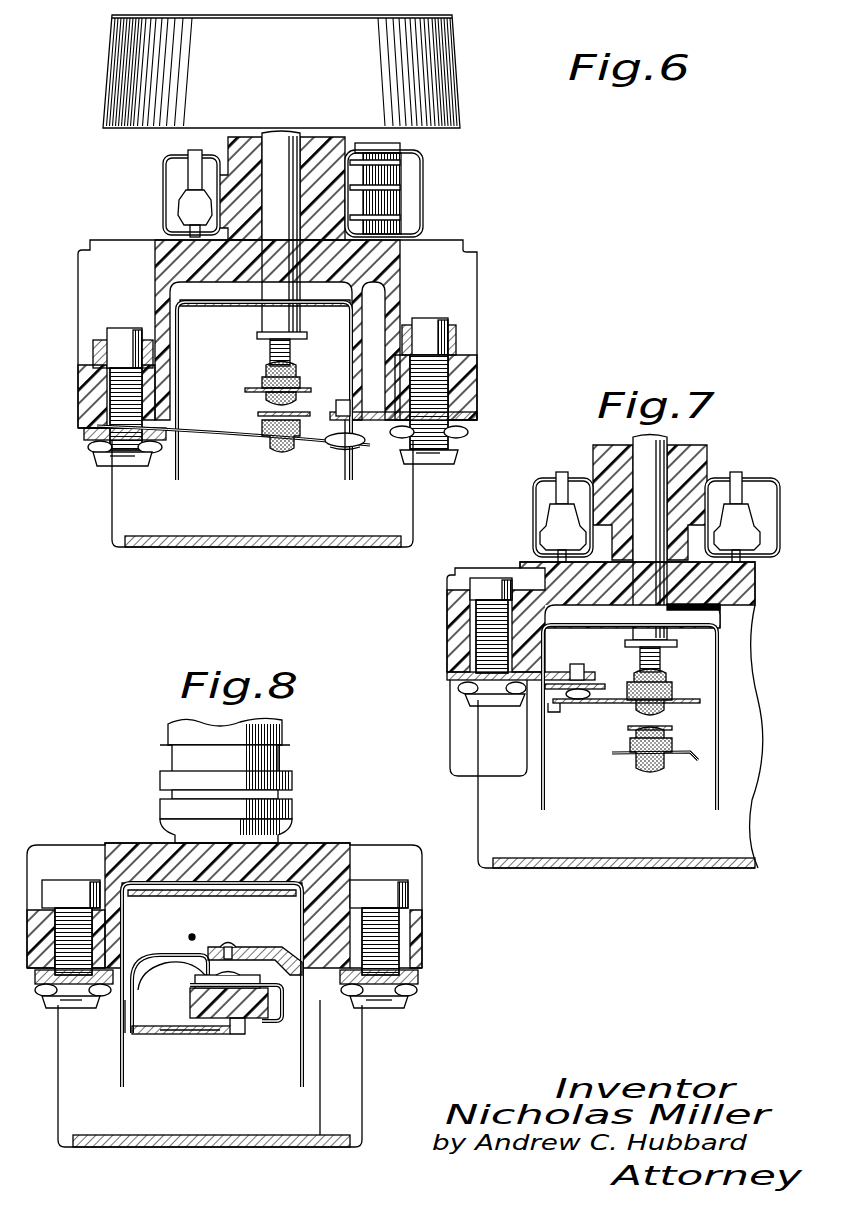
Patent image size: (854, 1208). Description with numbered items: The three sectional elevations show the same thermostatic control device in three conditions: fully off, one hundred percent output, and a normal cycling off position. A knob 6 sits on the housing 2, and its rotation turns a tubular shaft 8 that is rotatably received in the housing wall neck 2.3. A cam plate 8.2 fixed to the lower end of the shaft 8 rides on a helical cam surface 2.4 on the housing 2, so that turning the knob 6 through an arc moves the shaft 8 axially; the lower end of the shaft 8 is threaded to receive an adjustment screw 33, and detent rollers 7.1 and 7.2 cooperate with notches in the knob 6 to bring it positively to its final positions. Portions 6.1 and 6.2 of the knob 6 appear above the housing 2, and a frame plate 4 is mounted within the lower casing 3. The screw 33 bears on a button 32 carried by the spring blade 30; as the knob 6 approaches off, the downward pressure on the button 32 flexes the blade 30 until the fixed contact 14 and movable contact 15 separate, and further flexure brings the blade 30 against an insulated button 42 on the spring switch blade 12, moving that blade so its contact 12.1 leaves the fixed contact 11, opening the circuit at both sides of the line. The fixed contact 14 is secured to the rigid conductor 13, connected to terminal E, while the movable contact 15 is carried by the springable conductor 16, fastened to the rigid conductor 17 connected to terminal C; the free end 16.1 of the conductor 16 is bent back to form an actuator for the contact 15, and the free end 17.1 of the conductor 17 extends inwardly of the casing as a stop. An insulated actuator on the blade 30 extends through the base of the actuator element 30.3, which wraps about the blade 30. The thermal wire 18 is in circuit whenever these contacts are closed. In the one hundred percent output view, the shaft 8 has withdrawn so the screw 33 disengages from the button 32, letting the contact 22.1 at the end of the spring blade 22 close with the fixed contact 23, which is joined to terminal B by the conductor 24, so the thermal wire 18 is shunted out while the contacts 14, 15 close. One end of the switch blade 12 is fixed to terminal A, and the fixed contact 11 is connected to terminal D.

In FIG. 6, the housing 2 is at (150, 240).
In FIG. 8, the housing 2 is at (322, 846).
In FIG. 6, the housing wall neck 2.3 is at (395, 163).
In FIG. 6, the helical cam surface 2.4 is at (182, 300).
In FIG. 6, the can / base cup 3 is at (300, 547).
In FIG. 7, the can / base cup 3 is at (652, 868).
In FIG. 8, the can / base cup 3 is at (214, 1147).
In FIG. 6, the frame plate 4 is at (178, 475).
In FIG. 7, the frame plate 4 is at (544, 802).
In FIG. 8, the frame plate 4 is at (124, 1080).
In FIG. 6, the knob 6 is at (446, 56).
In FIG. 7, the knob 6 is at (596, 460).
In FIG. 8, the knob 6 is at (170, 736).
In FIG. 6, the knob collar 6.1 is at (400, 187).
In FIG. 8, the knob collar 6.1 is at (162, 782).
In FIG. 6, the knob collar 6.2 is at (400, 217).
In FIG. 8, the knob collar 6.2 is at (162, 806).
In FIG. 6, the detent roller 7.1 is at (395, 160).
In FIG. 7, the detent roller 7.1 is at (752, 490).
In FIG. 6, the detent roller 7.2 is at (166, 180).
In FIG. 7, the detent roller 7.2 is at (536, 518).
In FIG. 6, the tubular shaft 8 is at (262, 255).
In FIG. 7, the tubular shaft 8 is at (675, 442).
In FIG. 6, the cam plate 8.2 is at (260, 334).
In FIG. 6, the fixed contact 11 is at (368, 442).
In FIG. 6, the switch member 12 is at (232, 436).
In FIG. 7, the switch member 12 is at (676, 772).
In FIG. 6, the contact 12.1 is at (342, 448).
In FIG. 8, the rigid conductor 13 is at (262, 952).
In FIG. 8, the fixed contact 14 is at (238, 948).
In FIG. 8, the movable contact 15 is at (188, 972).
In FIG. 8, the springable conductor 16 is at (150, 965).
In FIG. 8, the free end of conductor 16.1 is at (268, 1018).
In FIG. 8, the rigid conductor 17 is at (128, 1018).
In FIG. 8, the free end of conductor 17.1 is at (188, 1035).
In FIG. 8, the thermal wire 18 is at (194, 934).
In FIG. 6, the switch blade 22 is at (260, 390).
In FIG. 7, the switch blade 22 is at (612, 704).
In FIG. 7, the contact 22.1 is at (560, 712).
In FIG. 7, the fixed contact 23 is at (548, 700).
In FIG. 7, the conductor 24 is at (562, 676).
In FIG. 6, the spring blade 30 is at (262, 413).
In FIG. 7, the spring blade 30 is at (672, 728).
In FIG. 8, the actuator element 30.3 is at (275, 998).
In FIG. 6, the button 32 is at (268, 372).
In FIG. 7, the button 32 is at (668, 690).
In FIG. 6, the adjustment screw 33 is at (270, 352).
In FIG. 7, the adjustment screw 33 is at (660, 665).
In FIG. 6, the insulated button 42 is at (280, 452).
In FIG. 7, the insulated button 42 is at (648, 776).
In FIG. 6, the thermostat terminal A is at (100, 448).
In FIG. 7, the thermostat terminal B is at (475, 682).
In FIG. 8, the thermostat terminal C is at (48, 997).
In FIG. 6, the thermostat terminal D is at (448, 458).
In FIG. 8, the thermostat terminal E is at (405, 982).